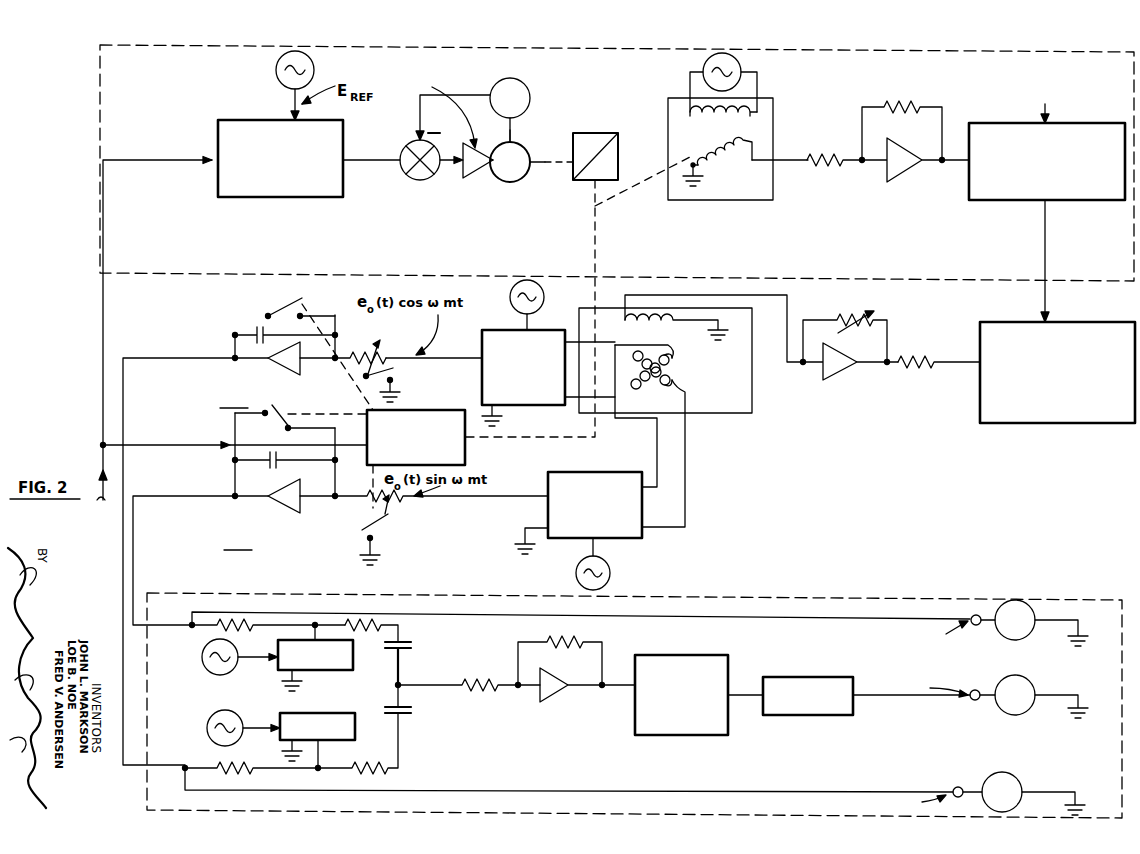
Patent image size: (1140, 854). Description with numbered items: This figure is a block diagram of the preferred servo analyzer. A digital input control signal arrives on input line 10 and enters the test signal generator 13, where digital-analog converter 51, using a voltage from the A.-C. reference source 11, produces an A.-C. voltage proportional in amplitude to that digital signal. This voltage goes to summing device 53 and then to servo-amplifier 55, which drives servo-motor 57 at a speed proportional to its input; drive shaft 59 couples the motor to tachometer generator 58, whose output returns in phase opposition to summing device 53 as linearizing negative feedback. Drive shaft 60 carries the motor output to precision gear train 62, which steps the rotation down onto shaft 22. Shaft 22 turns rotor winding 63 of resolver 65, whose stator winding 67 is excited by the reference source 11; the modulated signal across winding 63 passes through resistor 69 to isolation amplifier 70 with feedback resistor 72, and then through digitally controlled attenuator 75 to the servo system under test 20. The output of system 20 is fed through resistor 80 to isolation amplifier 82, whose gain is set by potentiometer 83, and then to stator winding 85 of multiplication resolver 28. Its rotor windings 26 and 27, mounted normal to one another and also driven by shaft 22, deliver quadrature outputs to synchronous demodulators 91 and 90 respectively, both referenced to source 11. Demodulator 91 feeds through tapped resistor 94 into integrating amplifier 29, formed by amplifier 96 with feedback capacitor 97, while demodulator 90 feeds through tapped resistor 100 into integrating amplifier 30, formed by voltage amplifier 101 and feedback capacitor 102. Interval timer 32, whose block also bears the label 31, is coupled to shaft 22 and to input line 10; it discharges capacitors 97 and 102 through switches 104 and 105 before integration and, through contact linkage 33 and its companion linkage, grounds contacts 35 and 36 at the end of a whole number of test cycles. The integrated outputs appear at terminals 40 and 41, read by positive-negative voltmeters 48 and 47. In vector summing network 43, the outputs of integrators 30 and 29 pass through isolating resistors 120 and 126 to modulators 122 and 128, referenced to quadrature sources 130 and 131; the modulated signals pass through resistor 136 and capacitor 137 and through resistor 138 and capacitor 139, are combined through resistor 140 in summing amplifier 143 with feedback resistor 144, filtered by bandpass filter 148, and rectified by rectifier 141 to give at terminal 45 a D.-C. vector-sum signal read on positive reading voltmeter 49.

The input line 10 is at (102, 362).
The A.-C. reference source 11 is at (276, 70).
The test signal generator 13 is at (132, 238).
The servo system under test 20 is at (1012, 406).
The shaft 22 is at (597, 210).
The rotor winding 26 is at (672, 356).
The rotor winding 27 is at (672, 386).
The multiplication resolver 28 is at (738, 396).
The integrating amplifier 29 is at (230, 561).
The integrating amplifier 30 is at (235, 560).
The interval timer 31 is at (414, 412).
The interval timer 32 is at (455, 456).
The contact linkage 33 is at (358, 388).
The contact 35 is at (395, 372).
The contact 36 is at (366, 522).
The terminal 40 is at (958, 787).
The output terminal 41 is at (976, 626).
The vector summing network 43 is at (634, 705).
The terminal 45 is at (972, 700).
The positive-negative reading voltmeter 47 is at (1028, 606).
The positive-negative reading voltmeter 48 is at (1018, 780).
The positive reading voltmeter 49 is at (1030, 688).
The digital-analog converter 51 is at (244, 191).
The summing device 53 is at (420, 180).
The servo-amplifier 55 is at (475, 178).
The servo-motor 57 is at (510, 182).
The tachometer generator 58 is at (528, 92).
The drive shaft 59 is at (516, 140).
The drive shaft 60 is at (552, 158).
The precision gear train 62 is at (600, 136).
The rotor winding 63 is at (724, 160).
The resolver 65 is at (718, 188).
The stator winding 67 is at (712, 120).
The resistor 69 is at (826, 168).
The isolation amplifier 70 is at (905, 170).
The resistor 72 is at (900, 104).
The digitally controlled attenuator 75 is at (1024, 193).
The resistor 80 is at (906, 358).
The isolation amplifier 82 is at (840, 372).
The potentiometer 83 is at (852, 322).
The stator winding 85 is at (637, 302).
The synchronous demodulator 90 is at (630, 520).
The synchronous demodulator 91 is at (545, 393).
The tapped resistor 94 is at (360, 351).
The amplifier 96 is at (290, 370).
The feedback capacitor 97 is at (250, 330).
The tapped resistor 100 is at (392, 506).
The voltage amplifier 101 is at (292, 506).
The feedback capacitor 102 is at (285, 454).
The switch 104 is at (295, 302).
The switch 105 is at (278, 426).
The isolating resistor 120 is at (236, 622).
The modulator 122 is at (345, 660).
The isolating resistor 126 is at (226, 774).
The modulator 128 is at (328, 718).
The A.-C. voltage source 130 is at (232, 667).
The reference source 131 is at (238, 732).
The resistor 136 is at (362, 620).
The capacitor 137 is at (410, 642).
The resistor 138 is at (360, 766).
The capacitor 139 is at (410, 710).
The resistor 140 is at (480, 680).
The rectifier 141 is at (826, 708).
The summing amplifier 143 is at (552, 692).
The feedback resistor 144 is at (570, 644).
The bandpass filter 148 is at (688, 660).